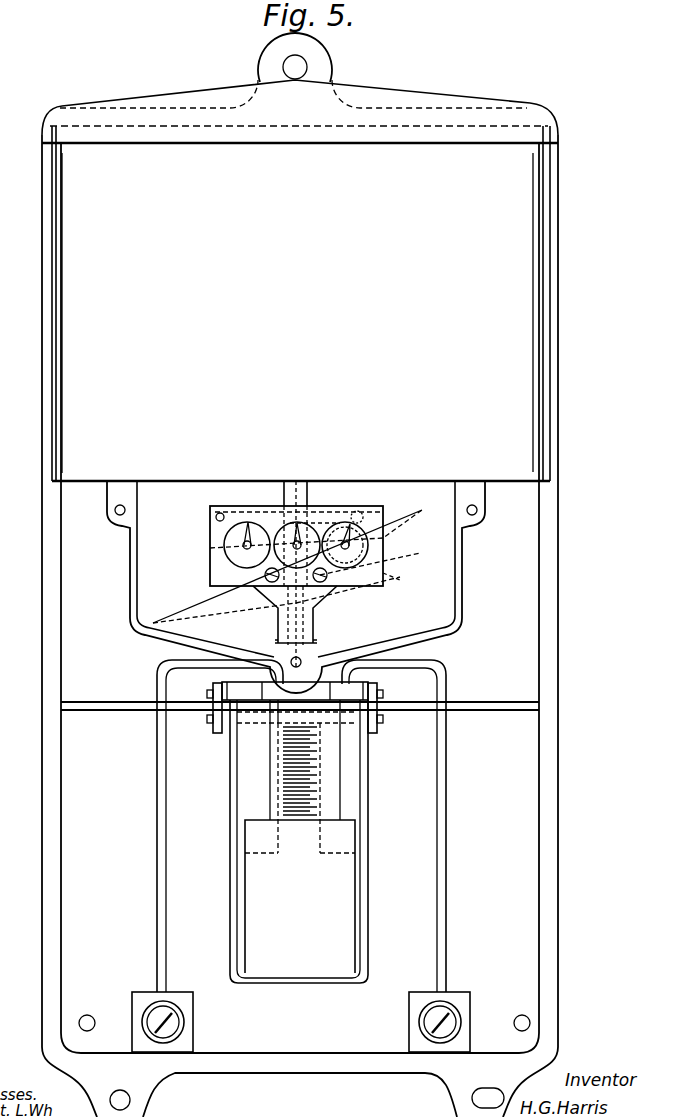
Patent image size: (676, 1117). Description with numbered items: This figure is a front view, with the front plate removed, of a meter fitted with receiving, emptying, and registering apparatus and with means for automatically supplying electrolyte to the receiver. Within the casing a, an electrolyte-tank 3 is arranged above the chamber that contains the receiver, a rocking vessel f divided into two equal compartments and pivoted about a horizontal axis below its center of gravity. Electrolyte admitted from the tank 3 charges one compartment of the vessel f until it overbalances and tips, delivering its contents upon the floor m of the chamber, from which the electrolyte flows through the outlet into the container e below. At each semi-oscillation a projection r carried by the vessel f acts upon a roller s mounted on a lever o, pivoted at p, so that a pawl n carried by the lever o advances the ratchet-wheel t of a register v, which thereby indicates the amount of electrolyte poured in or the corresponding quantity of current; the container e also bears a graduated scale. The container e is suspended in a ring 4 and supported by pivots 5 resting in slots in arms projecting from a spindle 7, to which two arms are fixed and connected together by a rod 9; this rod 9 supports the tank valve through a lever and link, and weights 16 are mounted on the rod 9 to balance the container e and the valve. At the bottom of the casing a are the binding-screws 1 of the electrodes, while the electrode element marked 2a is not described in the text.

The casing a is at (55, 607).
The electrolyte-tank 3 is at (301, 303).
The floor m is at (447, 626).
The pivot p is at (217, 515).
The projection r is at (223, 545).
The pawl n is at (376, 548).
The register v is at (270, 570).
The roller s is at (290, 507).
The lever o is at (337, 510).
The vessel f is at (287, 566).
The ratchet-wheel t is at (353, 585).
The ring 4 is at (353, 672).
The spindle 7 is at (80, 712).
The pivots 5 is at (212, 694).
The rod 9 is at (227, 727).
The container e is at (247, 796).
The weights 16 is at (358, 807).
The piston 2a is at (300, 896).
The binding-screws 1 is at (173, 1022).